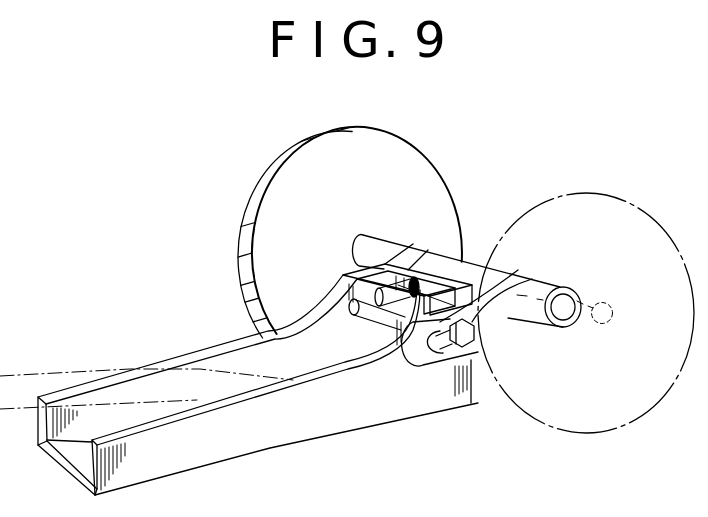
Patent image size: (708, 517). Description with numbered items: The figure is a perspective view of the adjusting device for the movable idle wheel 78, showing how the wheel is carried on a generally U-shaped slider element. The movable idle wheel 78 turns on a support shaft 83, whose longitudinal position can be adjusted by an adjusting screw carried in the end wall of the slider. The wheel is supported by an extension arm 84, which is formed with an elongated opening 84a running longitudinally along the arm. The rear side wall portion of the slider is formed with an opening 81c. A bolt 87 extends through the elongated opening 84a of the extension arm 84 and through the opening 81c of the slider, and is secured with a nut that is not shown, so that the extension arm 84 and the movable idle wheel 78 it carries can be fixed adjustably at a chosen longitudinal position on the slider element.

The movable idle wheel 78 is at (452, 183).
The opening 81c is at (353, 320).
The support shaft 83 is at (549, 284).
The extension arm 84 is at (509, 321).
The elongated opening 84a is at (440, 358).
The bolt 87 is at (380, 342).